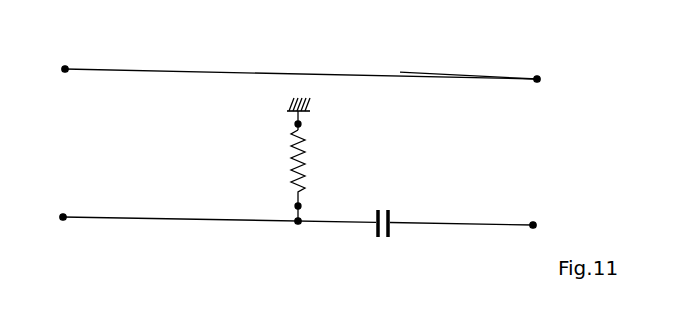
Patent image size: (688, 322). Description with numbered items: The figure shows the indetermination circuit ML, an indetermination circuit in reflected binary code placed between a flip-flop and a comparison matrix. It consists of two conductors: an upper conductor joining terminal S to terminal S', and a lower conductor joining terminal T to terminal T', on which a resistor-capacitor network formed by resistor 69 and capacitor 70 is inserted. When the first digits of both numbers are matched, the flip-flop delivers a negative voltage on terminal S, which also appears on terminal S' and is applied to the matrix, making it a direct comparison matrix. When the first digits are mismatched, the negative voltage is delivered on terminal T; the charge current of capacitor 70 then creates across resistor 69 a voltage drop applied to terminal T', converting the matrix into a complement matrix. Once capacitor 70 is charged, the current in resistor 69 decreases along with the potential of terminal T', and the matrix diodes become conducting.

The resistor 69 is at (316, 161).
The capacitor 70 is at (401, 217).
The terminal S is at (549, 79).
The terminal S′ S' is at (48, 68).
The terminal T is at (545, 225).
The terminal T′ T' is at (46, 216).
The indetermination circuit ML is at (517, 62).